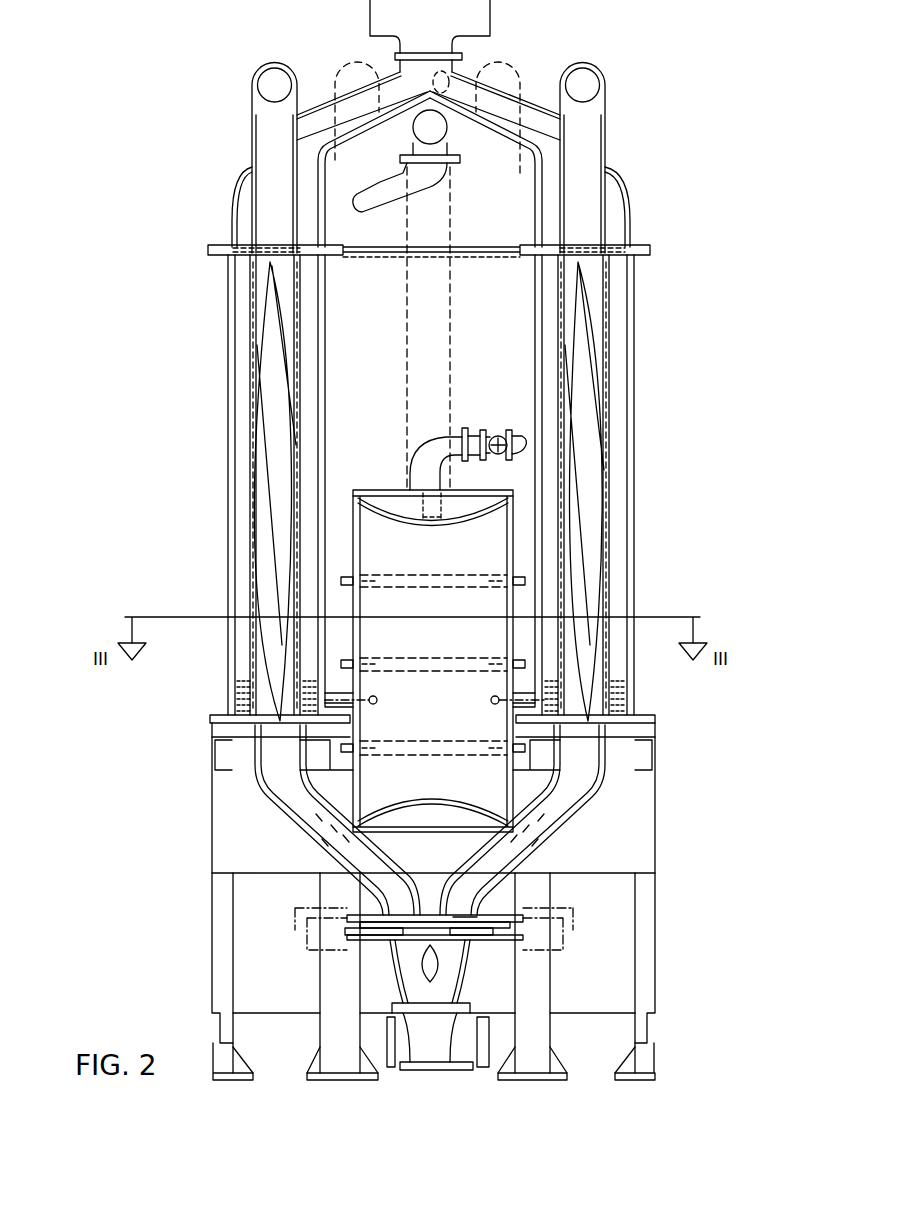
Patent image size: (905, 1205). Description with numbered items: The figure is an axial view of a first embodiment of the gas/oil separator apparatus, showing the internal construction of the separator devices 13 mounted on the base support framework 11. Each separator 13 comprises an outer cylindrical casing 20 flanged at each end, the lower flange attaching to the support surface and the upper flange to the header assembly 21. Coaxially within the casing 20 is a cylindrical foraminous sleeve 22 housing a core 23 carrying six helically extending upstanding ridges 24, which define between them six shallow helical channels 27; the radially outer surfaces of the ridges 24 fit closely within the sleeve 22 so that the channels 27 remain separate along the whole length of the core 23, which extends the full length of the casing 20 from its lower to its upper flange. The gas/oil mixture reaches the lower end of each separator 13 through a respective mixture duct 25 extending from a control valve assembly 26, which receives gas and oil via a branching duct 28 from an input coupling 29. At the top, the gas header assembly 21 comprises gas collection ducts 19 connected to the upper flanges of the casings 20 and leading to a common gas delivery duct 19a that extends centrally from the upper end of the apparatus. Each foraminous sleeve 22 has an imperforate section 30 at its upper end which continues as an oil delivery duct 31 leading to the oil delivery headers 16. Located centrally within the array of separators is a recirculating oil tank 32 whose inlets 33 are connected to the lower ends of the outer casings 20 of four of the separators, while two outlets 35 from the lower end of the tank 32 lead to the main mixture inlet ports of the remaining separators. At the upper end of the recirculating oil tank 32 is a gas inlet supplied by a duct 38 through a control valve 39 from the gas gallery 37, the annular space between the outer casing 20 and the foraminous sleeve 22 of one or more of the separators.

The base support framework 11 is at (196, 788).
The separator device 13 is at (196, 315).
The oil delivery header 16 is at (252, 83).
The gas collection duct 19 is at (500, 120).
The gas delivery duct 19a is at (488, 9).
The outer cylindrical casing 20 is at (228, 353).
The header assembly 21 is at (232, 217).
The foraminous sleeve 22 is at (297, 357).
The core 23 is at (245, 455).
The helically extending upstanding ridge 24 is at (285, 556).
The mixture duct 25 is at (320, 843).
The control valve assembly 26 is at (360, 951).
The helical channel 27 is at (609, 490).
The branching duct 28 is at (455, 973).
The input coupling 29 is at (470, 1038).
The imperforate section 30 is at (256, 282).
The oil delivery duct 31 is at (252, 147).
The recirculating oil tank 32 is at (393, 483).
The inlet 33 is at (491, 699).
The outlet 35 is at (376, 698).
The gas gallery 37 is at (240, 502).
The duct 38 is at (443, 443).
The control valve 39 is at (497, 435).